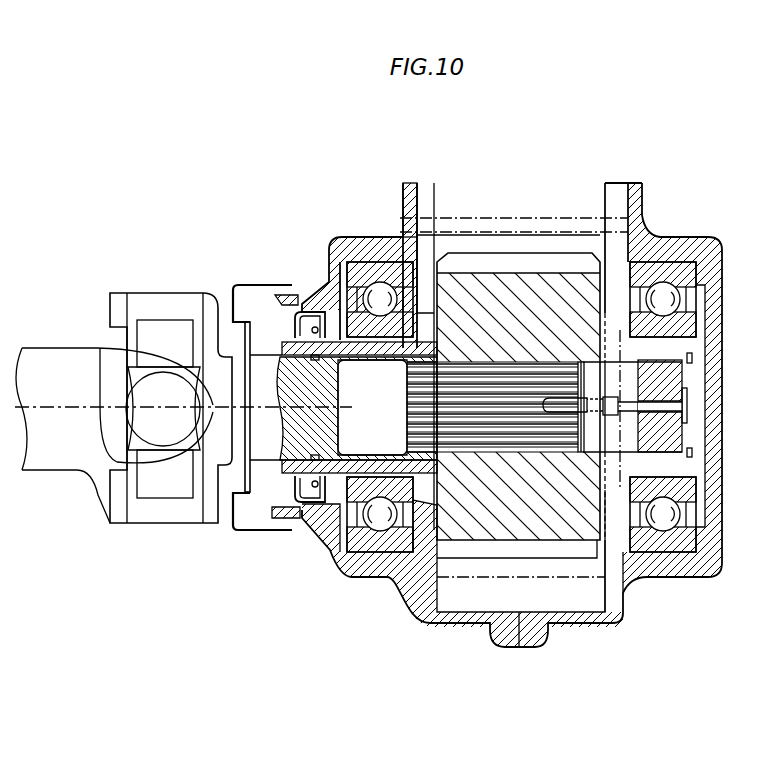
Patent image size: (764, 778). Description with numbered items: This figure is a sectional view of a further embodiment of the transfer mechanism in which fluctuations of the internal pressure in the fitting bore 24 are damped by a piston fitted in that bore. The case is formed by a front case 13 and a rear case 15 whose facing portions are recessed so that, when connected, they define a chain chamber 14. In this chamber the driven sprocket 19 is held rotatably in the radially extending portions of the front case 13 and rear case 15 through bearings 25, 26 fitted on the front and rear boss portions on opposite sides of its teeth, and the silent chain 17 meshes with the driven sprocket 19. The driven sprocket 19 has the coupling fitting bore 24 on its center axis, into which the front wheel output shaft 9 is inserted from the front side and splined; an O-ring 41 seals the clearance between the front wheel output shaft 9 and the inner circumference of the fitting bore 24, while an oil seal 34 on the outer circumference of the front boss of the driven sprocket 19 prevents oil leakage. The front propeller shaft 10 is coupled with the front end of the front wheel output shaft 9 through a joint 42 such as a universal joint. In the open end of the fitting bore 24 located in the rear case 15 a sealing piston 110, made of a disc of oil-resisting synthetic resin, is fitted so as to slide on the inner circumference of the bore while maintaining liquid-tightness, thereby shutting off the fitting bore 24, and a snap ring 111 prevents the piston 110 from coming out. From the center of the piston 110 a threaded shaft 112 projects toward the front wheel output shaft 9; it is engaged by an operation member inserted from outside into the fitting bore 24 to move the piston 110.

The front wheel output shaft 9 is at (512, 375).
The front propeller shaft 10 is at (53, 357).
The front case 13 is at (335, 242).
The chain chamber 14 is at (613, 193).
The rear case 15 is at (643, 230).
The silent chain 17 is at (437, 205).
The driven sprocket 19 is at (560, 280).
The fitting bore 24 is at (466, 366).
The bearing 25 is at (363, 262).
The bearing 26 is at (680, 270).
The oil seal 34 is at (290, 323).
The O-ring 41 is at (323, 497).
The joint 42 is at (158, 525).
The sealing piston 110 is at (678, 434).
The snap ring 111 is at (692, 360).
The threaded shaft 112 is at (617, 414).